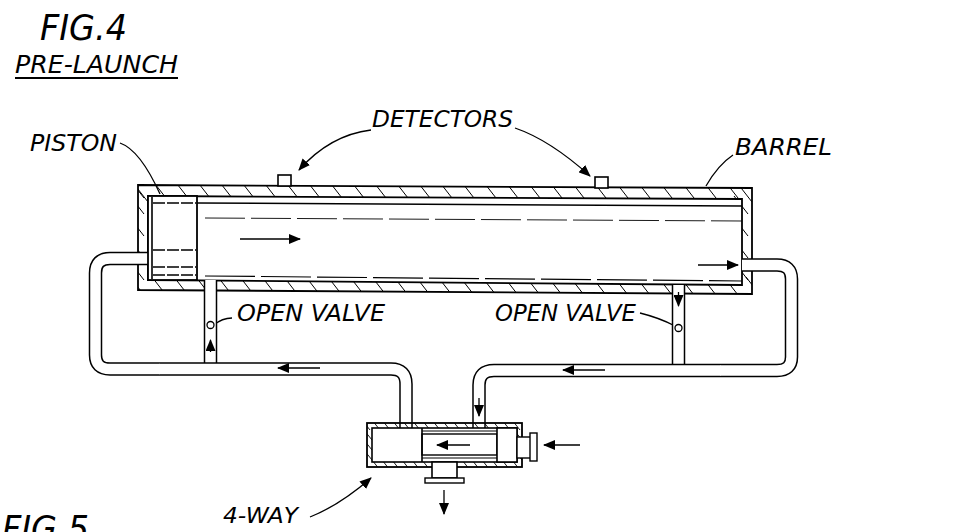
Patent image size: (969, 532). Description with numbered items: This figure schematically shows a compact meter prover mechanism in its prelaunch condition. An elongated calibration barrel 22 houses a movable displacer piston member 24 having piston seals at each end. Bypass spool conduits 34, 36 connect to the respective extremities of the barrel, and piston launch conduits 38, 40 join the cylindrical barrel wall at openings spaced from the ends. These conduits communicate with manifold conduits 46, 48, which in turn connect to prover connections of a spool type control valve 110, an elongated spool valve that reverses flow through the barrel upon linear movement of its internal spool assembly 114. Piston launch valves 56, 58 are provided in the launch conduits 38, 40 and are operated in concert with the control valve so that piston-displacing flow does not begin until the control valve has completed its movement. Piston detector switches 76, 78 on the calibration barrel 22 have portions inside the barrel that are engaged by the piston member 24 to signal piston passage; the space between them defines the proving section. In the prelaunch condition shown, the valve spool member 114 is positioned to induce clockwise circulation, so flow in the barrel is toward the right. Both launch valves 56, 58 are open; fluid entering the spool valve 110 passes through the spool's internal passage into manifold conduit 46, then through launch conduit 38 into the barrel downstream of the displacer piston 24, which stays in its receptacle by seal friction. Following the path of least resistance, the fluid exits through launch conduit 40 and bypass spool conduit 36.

The elongated calibration barrel 22 is at (438, 190).
The displacer piston member 24 is at (163, 227).
The bypass spool conduit 34 is at (89, 313).
The bypass spool conduit 36 is at (792, 327).
The piston launch conduit 38 is at (205, 300).
The piston launch conduit 40 is at (672, 350).
The manifold conduit 46 is at (238, 377).
The manifold conduit 48 is at (648, 370).
The piston launch valve 56 is at (207, 330).
The piston launch valve 58 is at (682, 335).
The piston detector switch 76 is at (277, 173).
The piston detector switch 78 is at (608, 175).
The spool type control valve 110 is at (529, 469).
The internal spool assembly 114 is at (477, 457).